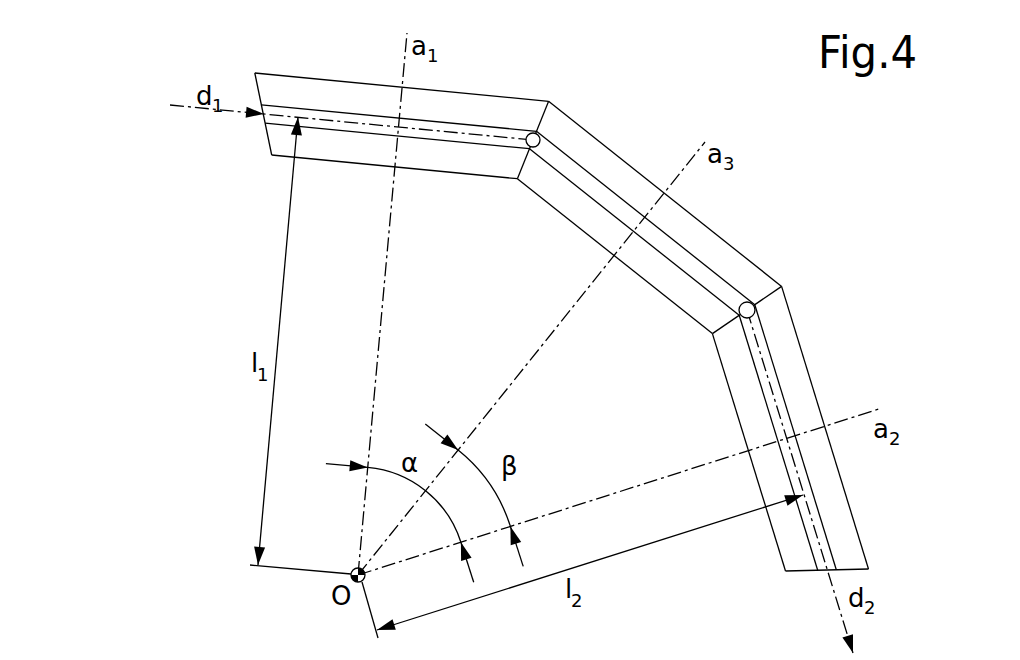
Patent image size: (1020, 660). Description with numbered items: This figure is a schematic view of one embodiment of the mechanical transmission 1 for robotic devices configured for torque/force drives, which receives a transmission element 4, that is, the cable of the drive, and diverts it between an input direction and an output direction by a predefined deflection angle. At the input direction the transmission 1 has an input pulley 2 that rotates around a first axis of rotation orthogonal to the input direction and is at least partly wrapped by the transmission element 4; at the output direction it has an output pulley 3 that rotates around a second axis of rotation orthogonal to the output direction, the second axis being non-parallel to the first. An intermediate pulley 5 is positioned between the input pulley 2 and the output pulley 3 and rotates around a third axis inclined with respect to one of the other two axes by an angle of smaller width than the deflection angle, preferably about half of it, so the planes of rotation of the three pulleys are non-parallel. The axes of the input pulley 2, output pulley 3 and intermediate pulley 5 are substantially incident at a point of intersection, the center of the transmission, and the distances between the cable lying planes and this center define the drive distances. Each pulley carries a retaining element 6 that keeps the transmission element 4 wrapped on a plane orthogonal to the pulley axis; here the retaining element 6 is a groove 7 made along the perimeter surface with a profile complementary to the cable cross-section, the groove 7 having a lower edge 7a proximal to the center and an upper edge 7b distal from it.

The mechanical transmission 1 is at (160, 388).
The input pulley 2 is at (335, 66).
The output pulley 3 is at (877, 516).
The transmission element 4 is at (757, 318).
The intermediate pulley 5 is at (640, 139).
The retaining element 6 is at (705, 256).
The groove 7 is at (352, 146).
The lower edge 7a is at (457, 143).
The upper edge 7b is at (293, 105).